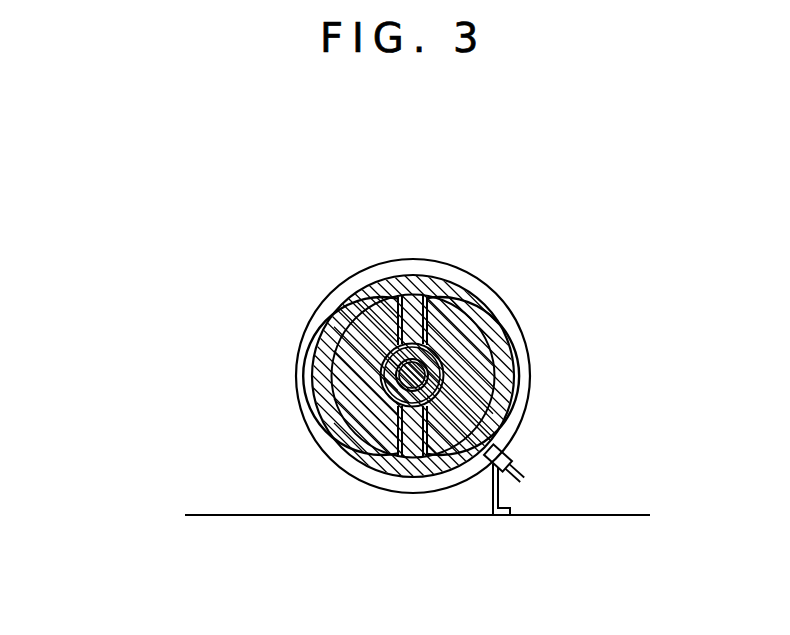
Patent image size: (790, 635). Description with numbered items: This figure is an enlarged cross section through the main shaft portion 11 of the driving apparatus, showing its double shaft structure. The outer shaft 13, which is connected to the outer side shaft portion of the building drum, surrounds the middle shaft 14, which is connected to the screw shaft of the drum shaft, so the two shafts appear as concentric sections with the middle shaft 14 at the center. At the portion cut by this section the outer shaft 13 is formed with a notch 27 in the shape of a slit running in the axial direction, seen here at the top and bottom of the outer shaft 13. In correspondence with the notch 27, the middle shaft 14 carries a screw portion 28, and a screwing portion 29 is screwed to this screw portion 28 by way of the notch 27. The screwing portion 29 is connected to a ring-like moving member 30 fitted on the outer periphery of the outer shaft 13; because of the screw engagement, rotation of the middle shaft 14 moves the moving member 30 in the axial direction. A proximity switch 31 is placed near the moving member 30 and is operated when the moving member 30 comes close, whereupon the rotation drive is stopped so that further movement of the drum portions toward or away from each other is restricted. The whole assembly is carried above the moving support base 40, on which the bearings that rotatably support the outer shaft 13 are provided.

The main shaft portion 11 is at (339, 389).
The outer shaft 13 is at (368, 389).
The middle shaft 14 is at (410, 338).
The notch 27 is at (413, 318).
The screw portion 28 is at (443, 381).
The screwing portion 29 is at (430, 363).
The moving member 30 is at (490, 315).
The proximity switch 31 is at (513, 461).
The moving support base 40 is at (235, 515).